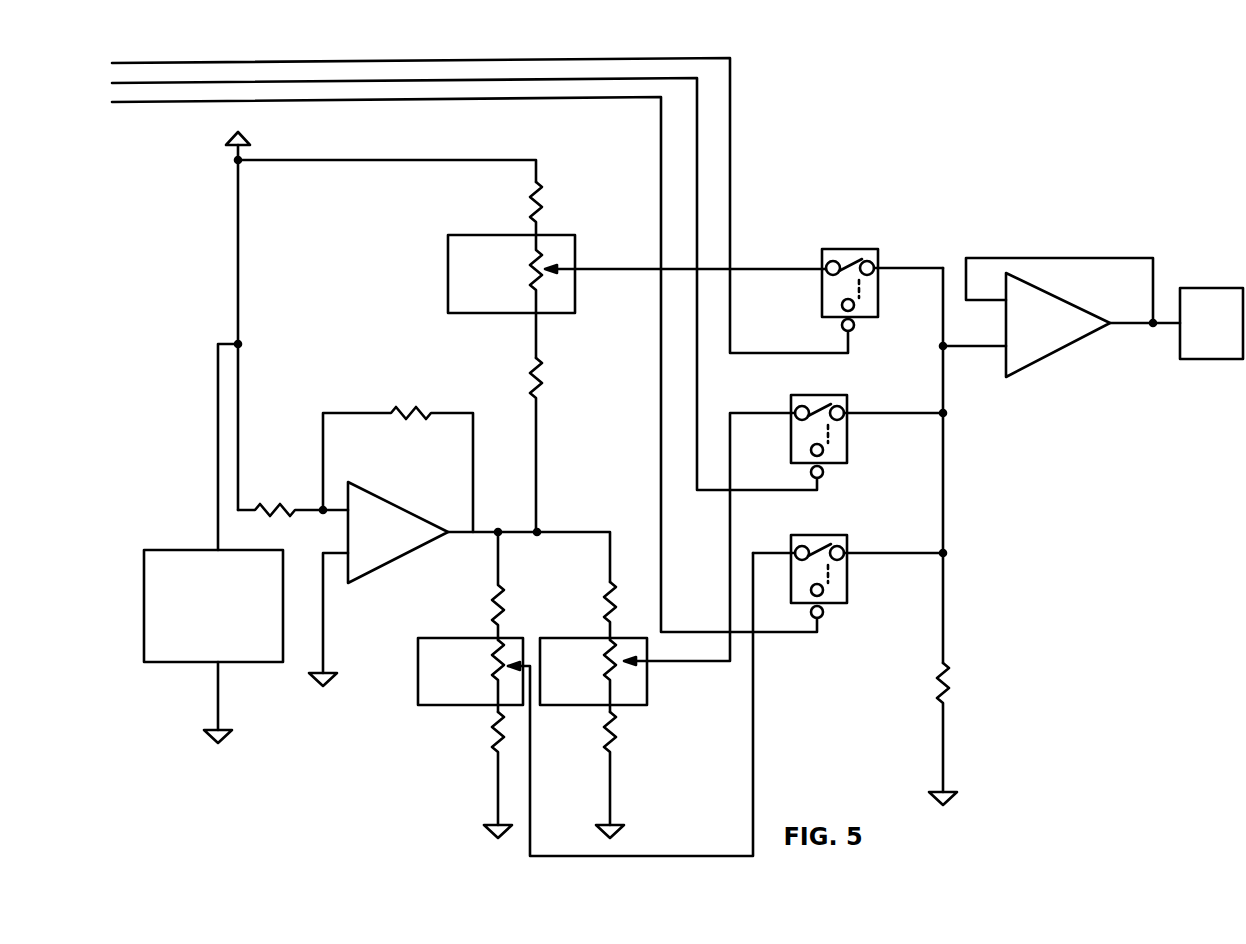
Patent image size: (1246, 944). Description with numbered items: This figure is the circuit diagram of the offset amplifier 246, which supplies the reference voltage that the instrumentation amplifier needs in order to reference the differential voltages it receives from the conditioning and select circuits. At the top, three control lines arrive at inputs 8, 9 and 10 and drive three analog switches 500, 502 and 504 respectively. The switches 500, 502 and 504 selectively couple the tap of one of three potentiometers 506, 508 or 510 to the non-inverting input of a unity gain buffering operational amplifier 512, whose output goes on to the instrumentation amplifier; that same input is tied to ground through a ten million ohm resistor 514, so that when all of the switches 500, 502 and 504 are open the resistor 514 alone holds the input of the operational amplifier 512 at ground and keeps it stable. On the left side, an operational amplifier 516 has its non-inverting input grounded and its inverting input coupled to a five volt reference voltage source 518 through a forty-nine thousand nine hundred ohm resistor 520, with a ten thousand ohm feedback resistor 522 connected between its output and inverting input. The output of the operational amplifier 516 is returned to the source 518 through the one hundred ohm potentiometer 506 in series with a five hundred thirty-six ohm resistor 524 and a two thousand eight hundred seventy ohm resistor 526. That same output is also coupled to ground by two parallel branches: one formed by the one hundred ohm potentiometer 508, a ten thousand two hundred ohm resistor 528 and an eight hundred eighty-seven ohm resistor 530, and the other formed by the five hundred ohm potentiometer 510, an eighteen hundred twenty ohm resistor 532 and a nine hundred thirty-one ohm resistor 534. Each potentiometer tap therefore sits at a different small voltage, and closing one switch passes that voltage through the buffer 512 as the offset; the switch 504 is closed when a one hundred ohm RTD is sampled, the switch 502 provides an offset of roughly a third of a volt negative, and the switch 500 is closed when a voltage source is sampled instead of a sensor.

The input 8 is at (128, 63).
The input 9 is at (138, 83).
The input 10 is at (162, 102).
The offset amplifier 246 is at (786, 161).
The switch 500 is at (893, 243).
The switch 502 is at (868, 393).
The switch 504 is at (865, 535).
The potentiometer 506 is at (578, 256).
The potentiometer 508 is at (418, 700).
The potentiometer 510 is at (652, 685).
The unity gain buffering operational amplifier 512 is at (1040, 372).
The resistor 514 is at (1013, 692).
The operational amplifier 516 is at (388, 570).
The 5 volt reference voltage source 518 is at (243, 665).
The resistor 520 is at (305, 490).
The feedback resistor 522 is at (432, 402).
The resistor 524 is at (548, 400).
The resistor 526 is at (556, 178).
The resistor 528 is at (430, 598).
The resistor 530 is at (485, 752).
The resistor 532 is at (620, 580).
The resistor 534 is at (660, 722).